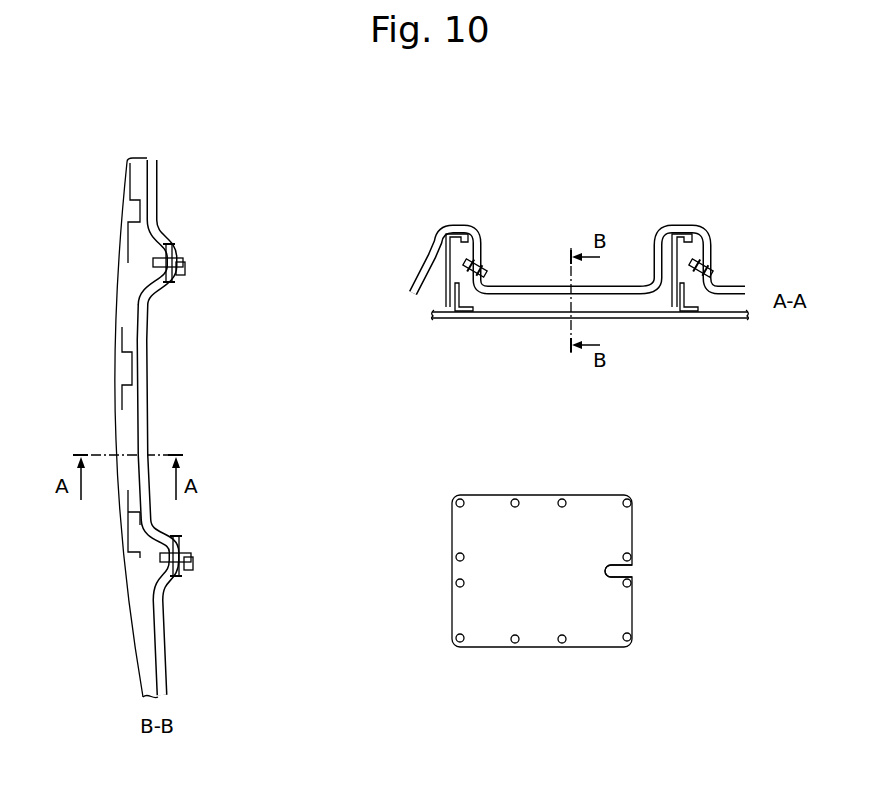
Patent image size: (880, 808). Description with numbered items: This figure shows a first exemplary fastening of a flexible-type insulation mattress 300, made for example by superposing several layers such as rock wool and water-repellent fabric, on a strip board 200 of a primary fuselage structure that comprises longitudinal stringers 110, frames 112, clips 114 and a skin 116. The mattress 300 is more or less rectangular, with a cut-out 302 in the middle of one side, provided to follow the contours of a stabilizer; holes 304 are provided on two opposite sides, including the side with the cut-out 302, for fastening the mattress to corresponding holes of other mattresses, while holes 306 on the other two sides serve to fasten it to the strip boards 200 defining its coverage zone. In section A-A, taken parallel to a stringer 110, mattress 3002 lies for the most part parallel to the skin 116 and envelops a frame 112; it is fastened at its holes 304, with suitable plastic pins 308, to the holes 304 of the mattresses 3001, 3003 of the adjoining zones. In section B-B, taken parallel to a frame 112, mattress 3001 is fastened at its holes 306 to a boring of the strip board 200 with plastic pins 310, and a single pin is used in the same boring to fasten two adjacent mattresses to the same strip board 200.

The longitudinal stringer 110 is at (128, 202).
The frame 112 is at (462, 234).
The clip 114 is at (456, 313).
The skin 116 is at (133, 618).
The strip board 200 is at (183, 267).
The plastic pin 310 is at (166, 244).
The plastic pin 308 is at (487, 271).
The flexible-type insulation mattress 300 is at (693, 471).
The insulation mattress 3001 is at (154, 176).
The insulation mattress 3002 is at (548, 286).
The insulation mattress 3003 is at (722, 288).
The cut-out 302 is at (637, 568).
The holes 304 is at (457, 505).
The holes 306 is at (560, 500).